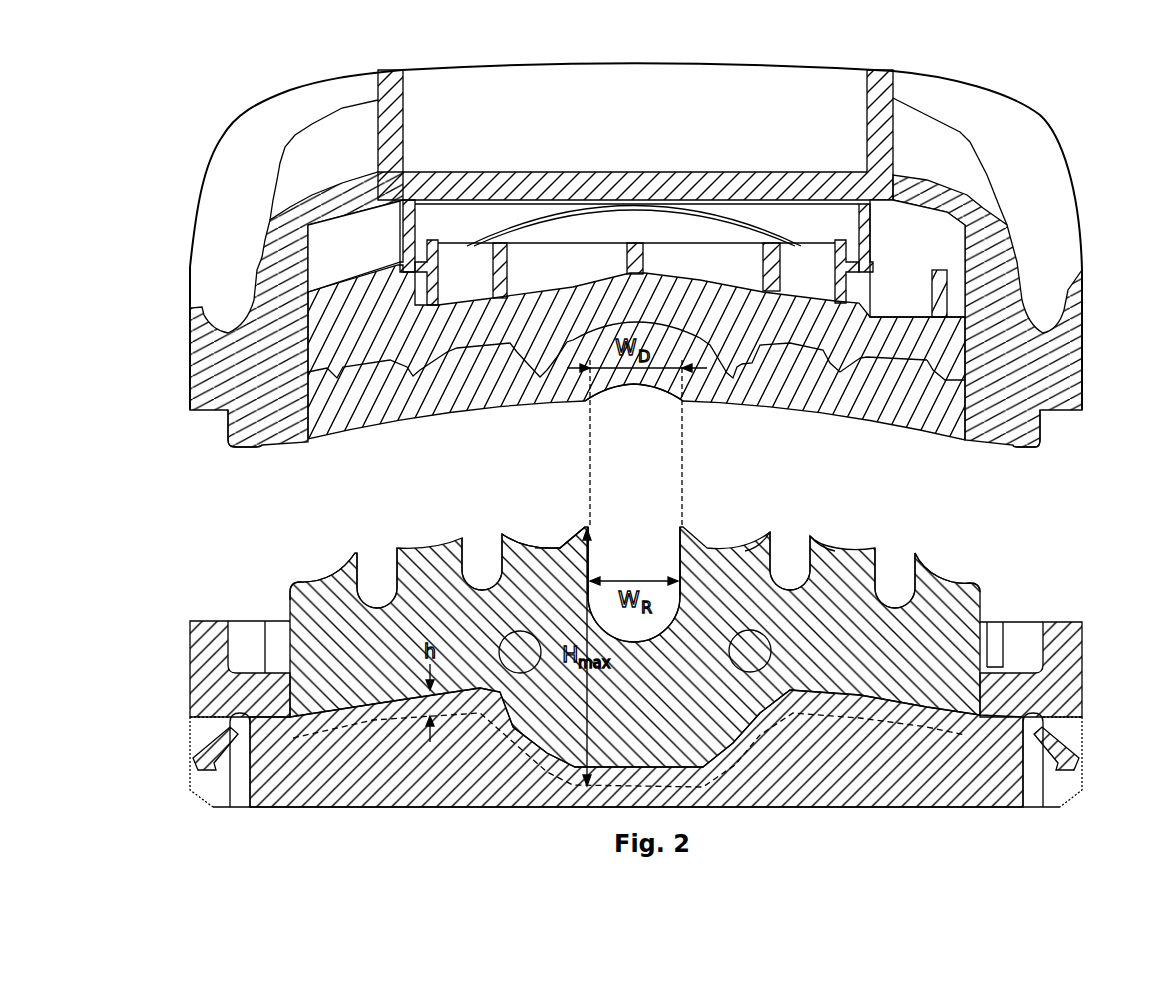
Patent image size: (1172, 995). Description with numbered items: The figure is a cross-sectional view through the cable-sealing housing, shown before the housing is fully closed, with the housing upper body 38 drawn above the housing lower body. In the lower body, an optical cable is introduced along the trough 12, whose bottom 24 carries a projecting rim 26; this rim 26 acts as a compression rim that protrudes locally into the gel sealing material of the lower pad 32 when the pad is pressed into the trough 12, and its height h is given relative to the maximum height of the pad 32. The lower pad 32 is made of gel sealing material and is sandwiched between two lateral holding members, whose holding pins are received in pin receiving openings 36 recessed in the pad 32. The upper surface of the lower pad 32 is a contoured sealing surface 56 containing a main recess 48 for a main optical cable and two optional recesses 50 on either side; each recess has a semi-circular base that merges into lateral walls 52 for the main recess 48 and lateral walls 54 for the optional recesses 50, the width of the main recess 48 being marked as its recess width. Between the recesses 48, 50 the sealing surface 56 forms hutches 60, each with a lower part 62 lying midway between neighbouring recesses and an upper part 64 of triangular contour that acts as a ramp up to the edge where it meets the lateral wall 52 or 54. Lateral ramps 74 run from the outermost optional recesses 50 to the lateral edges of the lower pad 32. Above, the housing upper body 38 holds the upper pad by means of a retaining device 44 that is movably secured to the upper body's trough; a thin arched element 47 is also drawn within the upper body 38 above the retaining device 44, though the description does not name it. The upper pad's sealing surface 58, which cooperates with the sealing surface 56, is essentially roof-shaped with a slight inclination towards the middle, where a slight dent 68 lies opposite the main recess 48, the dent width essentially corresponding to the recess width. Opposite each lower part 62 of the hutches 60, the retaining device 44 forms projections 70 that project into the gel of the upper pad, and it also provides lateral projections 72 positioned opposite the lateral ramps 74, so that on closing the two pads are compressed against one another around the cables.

The trough 12 is at (949, 628).
The bottom 24 is at (936, 719).
The rim 26 is at (958, 733).
The lower pad 32 is at (968, 662).
The pin receiving openings 36 is at (506, 664).
The housing upper body 38 is at (728, 188).
The retaining device 44 is at (772, 243).
The membrane 47 is at (717, 217).
The main recess 48 is at (620, 567).
The optional recesses 50 is at (362, 589).
The lateral walls 52 is at (595, 541).
The lateral walls 54 is at (774, 535).
The sealing surface 56 is at (313, 580).
The sealing surface 58 is at (323, 440).
The hutches 60 is at (541, 538).
The lower part 62 is at (542, 543).
The upper part 64 is at (557, 530).
The dent 68 is at (641, 394).
The projections 70 is at (733, 383).
The lateral projections 72 is at (933, 375).
The lateral ramps 74 is at (935, 570).